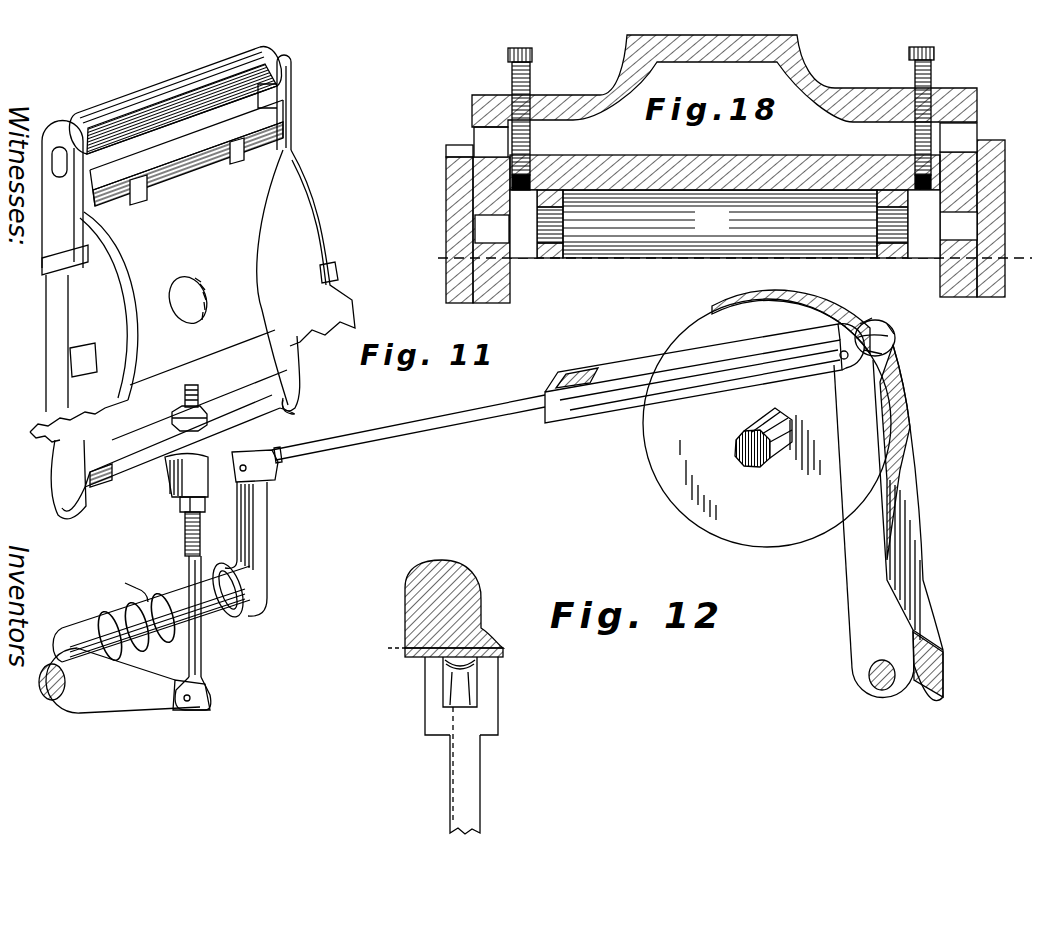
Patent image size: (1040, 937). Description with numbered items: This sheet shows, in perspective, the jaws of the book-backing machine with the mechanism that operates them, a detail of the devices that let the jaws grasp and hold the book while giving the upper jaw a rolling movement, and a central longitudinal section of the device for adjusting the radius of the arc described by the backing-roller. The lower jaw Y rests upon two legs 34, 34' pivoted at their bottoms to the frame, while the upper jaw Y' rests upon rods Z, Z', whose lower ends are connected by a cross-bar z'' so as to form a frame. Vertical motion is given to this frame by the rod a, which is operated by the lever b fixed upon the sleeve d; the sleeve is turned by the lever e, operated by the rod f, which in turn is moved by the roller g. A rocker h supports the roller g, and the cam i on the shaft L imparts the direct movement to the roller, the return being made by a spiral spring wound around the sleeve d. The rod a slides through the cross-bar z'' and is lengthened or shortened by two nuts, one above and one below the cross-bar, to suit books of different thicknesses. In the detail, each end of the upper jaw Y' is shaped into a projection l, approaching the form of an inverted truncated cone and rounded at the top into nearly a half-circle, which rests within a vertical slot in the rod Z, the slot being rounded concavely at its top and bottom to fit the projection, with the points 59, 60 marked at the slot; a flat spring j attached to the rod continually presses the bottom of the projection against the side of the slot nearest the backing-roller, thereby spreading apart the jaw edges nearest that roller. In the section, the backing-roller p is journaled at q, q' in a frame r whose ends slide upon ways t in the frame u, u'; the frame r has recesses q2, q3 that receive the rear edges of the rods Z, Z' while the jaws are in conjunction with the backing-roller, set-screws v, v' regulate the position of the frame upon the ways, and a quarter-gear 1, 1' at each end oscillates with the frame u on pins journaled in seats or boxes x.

In FIG. 18, the frame u is at (717, 69).
In FIG. 18, the cross-head bar end u' is at (992, 100).
In FIG. 18, the set-screw v is at (524, 119).
In FIG. 18, the set-screw v' is at (928, 118).
In FIG. 18, the ways t is at (725, 183).
In FIG. 18, the frame r is at (725, 197).
In FIG. 18, the backing-roller p is at (722, 224).
In FIG. 18, the journal q is at (523, 224).
In FIG. 18, the journal q' is at (924, 224).
In FIG. 18, the recess q2 is at (517, 204).
In FIG. 18, the recess q3 is at (915, 200).
In FIG. 18, the quarter-gear 1 is at (467, 224).
In FIG. 18, the frame side 1' is at (982, 218).
In FIG. 18, the seat or box x is at (731, 259).
In FIG. 11, the upper jaw Y' is at (175, 100).
In FIG. 12, the upper jaw Y' is at (447, 608).
In FIG. 11, the lower jaw Y is at (186, 153).
In FIG. 11, the rod Z is at (65, 266).
In FIG. 12, the rod Z is at (461, 696).
In FIG. 11, the rod Z' is at (284, 102).
In FIG. 11, the cross-bar z'' is at (172, 424).
In FIG. 11, the projection l is at (59, 162).
In FIG. 12, the projection l is at (460, 682).
In FIG. 11, the pin 59 is at (52, 167).
In FIG. 12, the pin 59 is at (434, 684).
In FIG. 11, the pin 60 is at (67, 166).
In FIG. 12, the pin 60 is at (487, 682).
In FIG. 11, the leg 34 is at (121, 327).
In FIG. 11, the side plate 34' is at (306, 280).
In FIG. 11, the rod a is at (186, 611).
In FIG. 11, the lever b is at (124, 680).
In FIG. 11, the sleeve d is at (151, 614).
In FIG. 11, the lever e is at (244, 535).
In FIG. 11, the rod f is at (568, 393).
In FIG. 11, the roller g is at (881, 337).
In FIG. 11, the rocker h is at (888, 523).
In FIG. 11, the cam i is at (767, 418).
In FIG. 11, the shaft L is at (763, 437).
In FIG. 12, the flat spring j is at (457, 770).